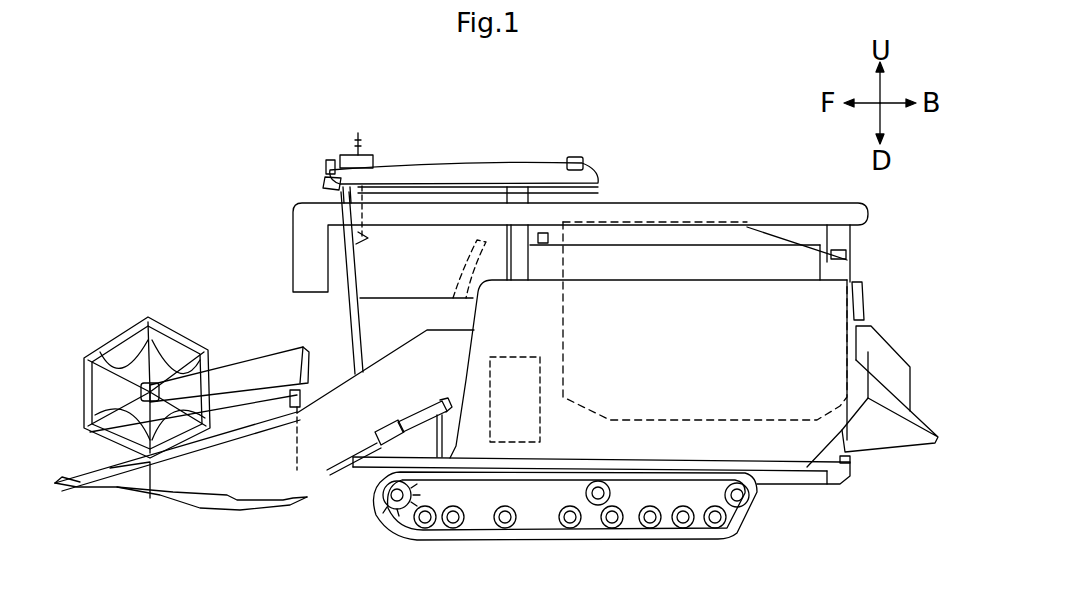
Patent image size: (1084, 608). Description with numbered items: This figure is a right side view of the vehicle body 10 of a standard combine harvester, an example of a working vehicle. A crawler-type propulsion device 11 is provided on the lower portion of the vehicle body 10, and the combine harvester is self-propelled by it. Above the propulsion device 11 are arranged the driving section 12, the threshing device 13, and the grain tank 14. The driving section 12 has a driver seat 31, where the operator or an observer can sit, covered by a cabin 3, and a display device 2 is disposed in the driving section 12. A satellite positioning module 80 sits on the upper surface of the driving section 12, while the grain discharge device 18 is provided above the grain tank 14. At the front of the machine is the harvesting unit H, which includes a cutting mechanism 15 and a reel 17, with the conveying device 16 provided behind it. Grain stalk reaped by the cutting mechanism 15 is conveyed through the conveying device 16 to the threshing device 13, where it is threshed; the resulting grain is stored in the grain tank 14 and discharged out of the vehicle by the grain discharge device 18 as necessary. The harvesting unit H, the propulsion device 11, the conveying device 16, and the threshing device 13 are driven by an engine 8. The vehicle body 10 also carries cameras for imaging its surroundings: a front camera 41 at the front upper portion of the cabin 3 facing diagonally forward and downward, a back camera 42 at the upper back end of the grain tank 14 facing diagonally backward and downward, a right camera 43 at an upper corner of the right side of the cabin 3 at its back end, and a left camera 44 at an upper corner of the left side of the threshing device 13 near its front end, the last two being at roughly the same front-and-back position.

The display device 2 is at (362, 222).
The cabin 3 is at (450, 178).
The engine 8 is at (508, 357).
The vehicle body 10 is at (855, 478).
The propulsion device 11 is at (740, 512).
The driving section 12 is at (378, 250).
The threshing device 13 is at (862, 347).
The grain tank 14 is at (783, 232).
The cutting mechanism 15 is at (122, 492).
The conveying device 16 is at (346, 392).
The reel 17 is at (106, 345).
The grain discharge device 18 is at (708, 203).
The driver seat 31 is at (460, 256).
The front camera 41 is at (331, 159).
The back camera 42 is at (846, 252).
The right camera 43 is at (576, 156).
The left camera 44 is at (549, 238).
The satellite positioning module 80 is at (364, 153).
The harvesting unit H is at (183, 332).